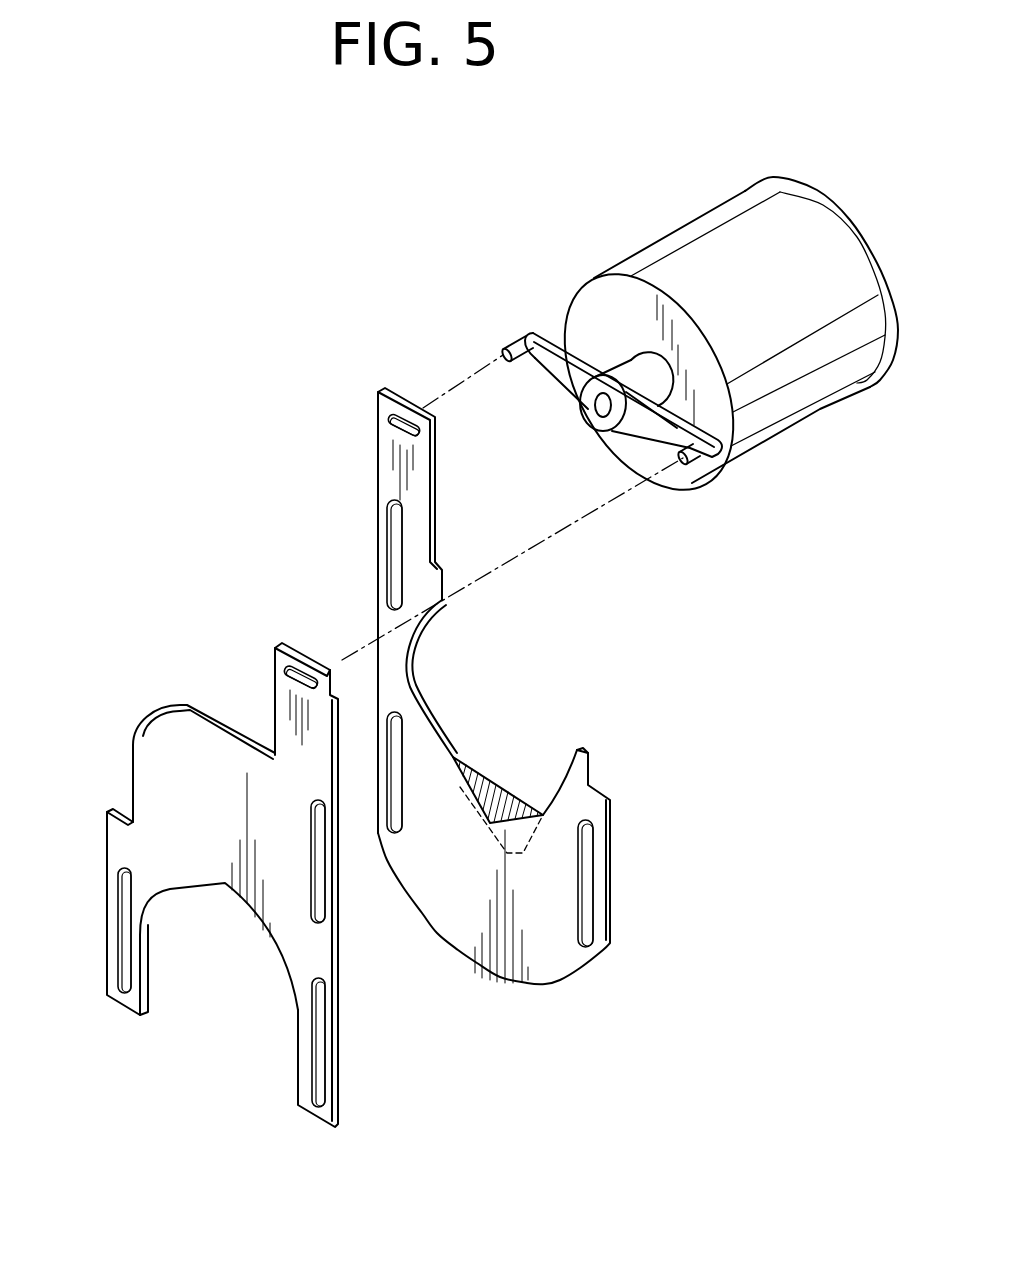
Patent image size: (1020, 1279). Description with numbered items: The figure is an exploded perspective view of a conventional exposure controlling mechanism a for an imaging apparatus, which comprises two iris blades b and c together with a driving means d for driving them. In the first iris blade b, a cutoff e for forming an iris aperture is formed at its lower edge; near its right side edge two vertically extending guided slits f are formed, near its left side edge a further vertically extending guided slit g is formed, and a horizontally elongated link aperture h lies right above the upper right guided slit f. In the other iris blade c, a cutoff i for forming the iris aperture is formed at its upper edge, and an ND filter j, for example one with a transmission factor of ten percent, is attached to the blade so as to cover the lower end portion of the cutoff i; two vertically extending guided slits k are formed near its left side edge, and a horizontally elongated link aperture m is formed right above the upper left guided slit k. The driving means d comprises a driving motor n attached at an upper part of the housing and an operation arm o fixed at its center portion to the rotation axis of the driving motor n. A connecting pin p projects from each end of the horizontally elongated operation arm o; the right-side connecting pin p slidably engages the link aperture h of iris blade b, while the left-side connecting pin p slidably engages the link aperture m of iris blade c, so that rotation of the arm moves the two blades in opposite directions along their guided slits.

The exposure controlling mechanism a is at (207, 334).
The iris blade b is at (142, 728).
The iris blade c is at (570, 983).
The driving means d is at (684, 226).
The cutoff e is at (238, 903).
The guided slits f is at (320, 890).
The guided slit g is at (123, 925).
The elongated link aperture h is at (300, 668).
The cutoff i is at (450, 752).
The ND filter j is at (510, 800).
The guided slits k is at (397, 550).
The elongated link aperture m is at (398, 410).
The driving motor n is at (850, 403).
The operation arm o is at (552, 342).
The connecting pin p is at (520, 340).